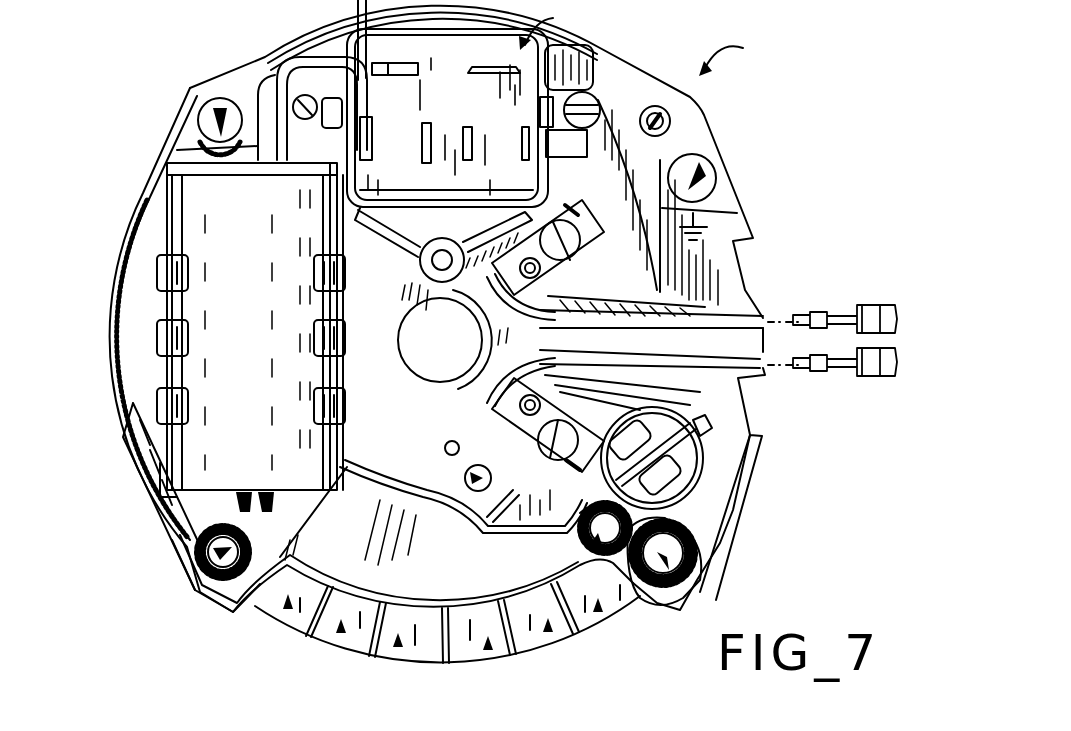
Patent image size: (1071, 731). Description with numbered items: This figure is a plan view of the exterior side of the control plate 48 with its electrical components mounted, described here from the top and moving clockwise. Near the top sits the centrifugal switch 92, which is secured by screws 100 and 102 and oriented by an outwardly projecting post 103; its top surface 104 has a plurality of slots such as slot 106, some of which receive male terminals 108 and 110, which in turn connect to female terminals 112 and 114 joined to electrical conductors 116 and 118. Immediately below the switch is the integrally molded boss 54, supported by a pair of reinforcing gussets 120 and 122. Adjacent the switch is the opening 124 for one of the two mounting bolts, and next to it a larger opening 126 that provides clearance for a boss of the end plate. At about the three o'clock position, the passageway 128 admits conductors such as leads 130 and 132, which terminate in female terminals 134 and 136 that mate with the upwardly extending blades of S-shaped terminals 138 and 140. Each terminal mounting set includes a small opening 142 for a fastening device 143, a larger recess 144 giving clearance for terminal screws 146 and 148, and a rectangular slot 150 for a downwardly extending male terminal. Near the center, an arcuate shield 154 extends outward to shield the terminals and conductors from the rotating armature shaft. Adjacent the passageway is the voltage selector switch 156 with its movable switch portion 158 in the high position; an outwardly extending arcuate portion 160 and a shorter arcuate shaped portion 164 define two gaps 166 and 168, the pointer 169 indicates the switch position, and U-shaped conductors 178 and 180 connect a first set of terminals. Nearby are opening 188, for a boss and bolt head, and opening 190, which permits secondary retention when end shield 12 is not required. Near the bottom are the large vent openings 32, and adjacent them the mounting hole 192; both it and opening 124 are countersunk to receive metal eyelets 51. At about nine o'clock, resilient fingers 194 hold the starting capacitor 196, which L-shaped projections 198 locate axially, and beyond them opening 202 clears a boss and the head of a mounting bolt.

The end shield 12 is at (437, 306).
The vent openings 32 is at (396, 648).
The control plate 48 is at (736, 55).
The metal eyelets 51 is at (672, 118).
The boss 54 is at (425, 268).
The centrifugal switch 92 is at (552, 29).
The screw 100 is at (267, 90).
The screw 102 is at (590, 110).
The outwardly projecting post 103 is at (333, 118).
The top surface 104 is at (473, 113).
The slot 106 is at (472, 137).
The male terminal 108 is at (476, 66).
The male terminal 110 is at (422, 147).
The female terminal 112 is at (378, 130).
The female terminal 114 is at (388, 62).
The electrical conductor 116 is at (333, 55).
The electrical conductor 118 is at (361, 40).
The reinforcing gusset 120 is at (407, 213).
The reinforcing gusset 122 is at (483, 217).
The opening 124 is at (673, 110).
The opening 126 is at (706, 162).
The passageway 128 is at (728, 308).
The lead 130 is at (747, 313).
The lead 132 is at (753, 360).
The female terminal 134 is at (478, 317).
The female terminal 136 is at (507, 373).
The S-shaped terminal 138 is at (585, 268).
The S-shaped terminal 140 is at (527, 425).
The small opening 142 is at (447, 445).
The fastening device 143 is at (507, 403).
The recess 144 is at (466, 474).
The terminal screw 146 is at (585, 215).
The terminal screw 148 is at (540, 440).
The rectangular slot 150 is at (473, 513).
The arcuate shield 154 is at (497, 335).
The voltage selector switch 156 is at (747, 460).
The movable switch portion 158 is at (737, 480).
The arcuate portion 160 is at (720, 573).
The arcuate shaped portion 164 is at (727, 458).
The gap 166 is at (716, 425).
The gap 168 is at (720, 540).
The pointer 169 is at (687, 400).
The U-shaped conductor 178 is at (713, 562).
The U-shaped conductor 180 is at (623, 433).
The opening 188 is at (693, 600).
The opening 190 is at (583, 545).
The mounting hole 192 is at (207, 553).
The resilient fingers 194 is at (167, 403).
The starting capacitor 196 is at (268, 265).
The L-shaped projections 198 is at (173, 493).
The opening 202 is at (223, 97).